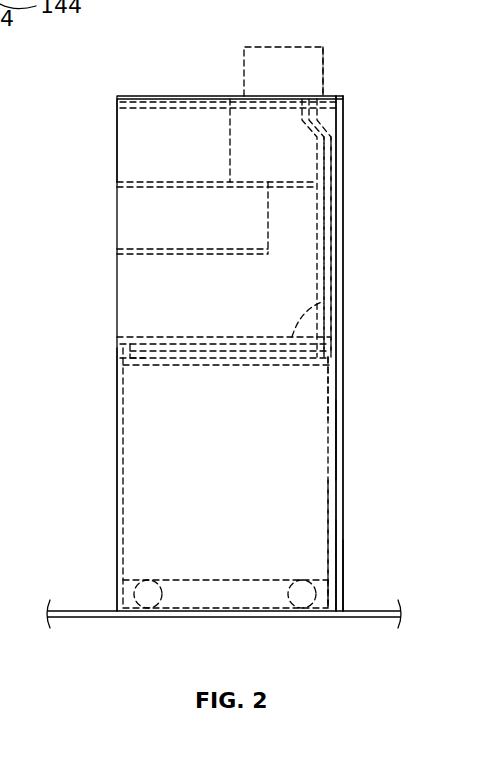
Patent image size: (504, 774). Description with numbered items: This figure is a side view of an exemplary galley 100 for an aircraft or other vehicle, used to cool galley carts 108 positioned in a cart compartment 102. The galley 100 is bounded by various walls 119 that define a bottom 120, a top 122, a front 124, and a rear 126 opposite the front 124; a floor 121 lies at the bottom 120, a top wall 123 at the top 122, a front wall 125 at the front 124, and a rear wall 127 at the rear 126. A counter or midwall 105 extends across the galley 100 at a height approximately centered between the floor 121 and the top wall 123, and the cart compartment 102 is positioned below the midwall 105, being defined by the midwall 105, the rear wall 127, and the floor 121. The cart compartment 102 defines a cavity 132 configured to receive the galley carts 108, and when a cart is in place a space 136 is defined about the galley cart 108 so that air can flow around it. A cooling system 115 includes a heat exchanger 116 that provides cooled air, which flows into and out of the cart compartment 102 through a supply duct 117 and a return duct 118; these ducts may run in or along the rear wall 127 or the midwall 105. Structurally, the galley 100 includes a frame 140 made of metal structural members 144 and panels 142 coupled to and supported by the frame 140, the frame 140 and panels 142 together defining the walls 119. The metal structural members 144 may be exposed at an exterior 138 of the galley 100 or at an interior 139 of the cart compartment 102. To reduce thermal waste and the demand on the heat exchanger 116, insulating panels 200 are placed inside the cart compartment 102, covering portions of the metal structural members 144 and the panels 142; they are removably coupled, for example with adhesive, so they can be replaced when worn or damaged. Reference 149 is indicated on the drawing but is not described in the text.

The galley 100 is at (88, 95).
The cart compartment 102 is at (186, 587).
The midwall 105 is at (338, 303).
The galley cart 108 is at (300, 530).
The cooling system 115 is at (285, 45).
The heat exchanger 116 is at (325, 70).
The supply duct 117 is at (340, 178).
The return duct 118 is at (230, 96).
The walls 119 is at (345, 468).
The bottom 120 is at (212, 618).
The floor 121 is at (305, 618).
The top 122 is at (185, 100).
The top wall 123 is at (128, 96).
The front 124 is at (117, 430).
The front wall 125 is at (117, 147).
The rear 126 is at (336, 262).
The rear wall 127 is at (336, 235).
The cavity 132 is at (338, 440).
The space 136 is at (338, 548).
The exterior 138 is at (338, 572).
The interior 139 is at (326, 579).
The frame 140 is at (346, 97).
The panels 142 is at (150, 480).
The metal structural members 144 is at (345, 140).
The mullion 149 is at (145, 345).
The insulating panels 200 is at (337, 355).